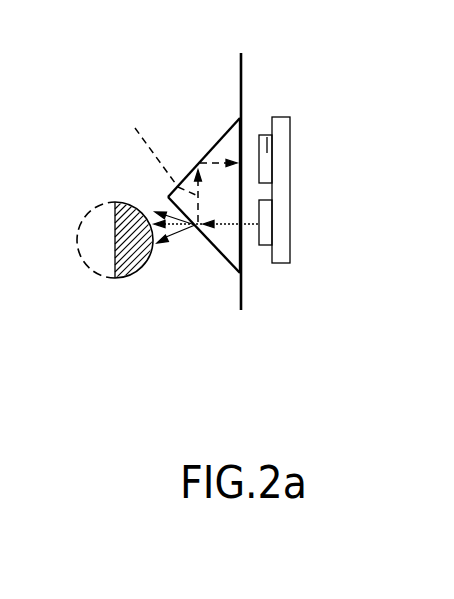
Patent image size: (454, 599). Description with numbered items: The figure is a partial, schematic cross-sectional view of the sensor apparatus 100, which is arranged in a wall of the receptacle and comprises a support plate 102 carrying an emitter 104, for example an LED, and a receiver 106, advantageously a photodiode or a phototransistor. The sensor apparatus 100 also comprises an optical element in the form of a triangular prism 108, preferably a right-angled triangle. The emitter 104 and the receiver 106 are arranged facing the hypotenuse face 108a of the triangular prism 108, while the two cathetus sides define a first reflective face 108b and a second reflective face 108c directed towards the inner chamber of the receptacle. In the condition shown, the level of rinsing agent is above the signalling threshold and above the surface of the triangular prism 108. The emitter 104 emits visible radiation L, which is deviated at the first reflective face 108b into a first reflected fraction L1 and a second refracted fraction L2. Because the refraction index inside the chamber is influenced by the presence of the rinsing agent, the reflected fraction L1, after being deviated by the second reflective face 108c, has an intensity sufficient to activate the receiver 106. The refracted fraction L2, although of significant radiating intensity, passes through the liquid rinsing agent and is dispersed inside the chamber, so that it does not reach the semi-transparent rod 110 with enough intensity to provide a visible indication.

The sensor apparatus 100 is at (325, 146).
The support plate 102 is at (280, 252).
The emitter 104 is at (262, 230).
The receiver 106 is at (267, 137).
The triangular prism 108 is at (238, 224).
The hypotenuse face 108a is at (245, 233).
The first reflective face 108b is at (210, 247).
The second reflective face 108c is at (212, 148).
The semi-transparent rod 110 is at (110, 199).
The visible radiation L is at (218, 225).
The first reflected fraction L1 is at (174, 164).
The second refracted fraction L2 is at (190, 240).